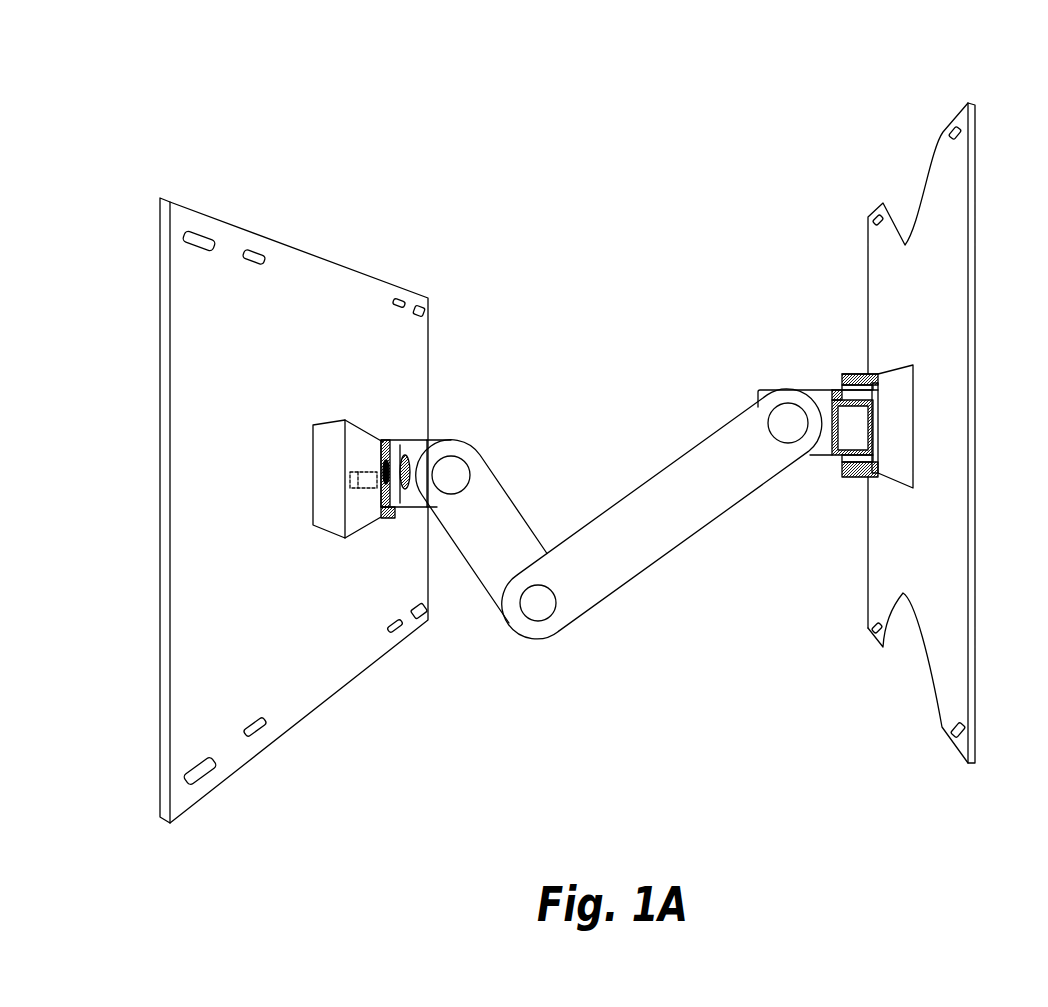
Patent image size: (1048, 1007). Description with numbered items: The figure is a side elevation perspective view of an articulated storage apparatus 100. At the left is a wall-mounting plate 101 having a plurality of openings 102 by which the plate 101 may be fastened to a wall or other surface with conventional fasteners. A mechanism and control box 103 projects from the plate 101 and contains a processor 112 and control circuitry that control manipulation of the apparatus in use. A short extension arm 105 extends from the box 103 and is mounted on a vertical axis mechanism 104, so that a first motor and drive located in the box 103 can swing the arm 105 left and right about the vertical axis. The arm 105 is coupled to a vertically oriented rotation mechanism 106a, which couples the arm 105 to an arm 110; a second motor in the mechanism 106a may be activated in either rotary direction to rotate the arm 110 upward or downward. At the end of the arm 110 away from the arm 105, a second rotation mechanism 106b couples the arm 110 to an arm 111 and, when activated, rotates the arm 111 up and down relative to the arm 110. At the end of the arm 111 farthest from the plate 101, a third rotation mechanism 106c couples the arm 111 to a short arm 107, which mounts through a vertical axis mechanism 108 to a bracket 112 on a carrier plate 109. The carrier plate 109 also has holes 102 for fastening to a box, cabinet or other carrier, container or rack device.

The articulated storage apparatus 100 is at (326, 110).
The wall-mounting plate 101 is at (325, 250).
The openings 102 is at (200, 232).
The mechanism and control box 103 is at (333, 422).
The vertical axis mechanism 104 is at (392, 444).
The short extension arm 105 is at (420, 445).
The vertically oriented rotation mechanism 106a is at (455, 473).
The second rotation mechanism 106b is at (538, 602).
The third rotation mechanism 106c is at (787, 422).
The short arm 107 is at (827, 390).
The vertical axis mechanism 108 is at (847, 442).
The carrier plate 109 is at (883, 282).
The arm 110 is at (497, 518).
The arm 111 is at (625, 548).
The processor 112 is at (350, 479).